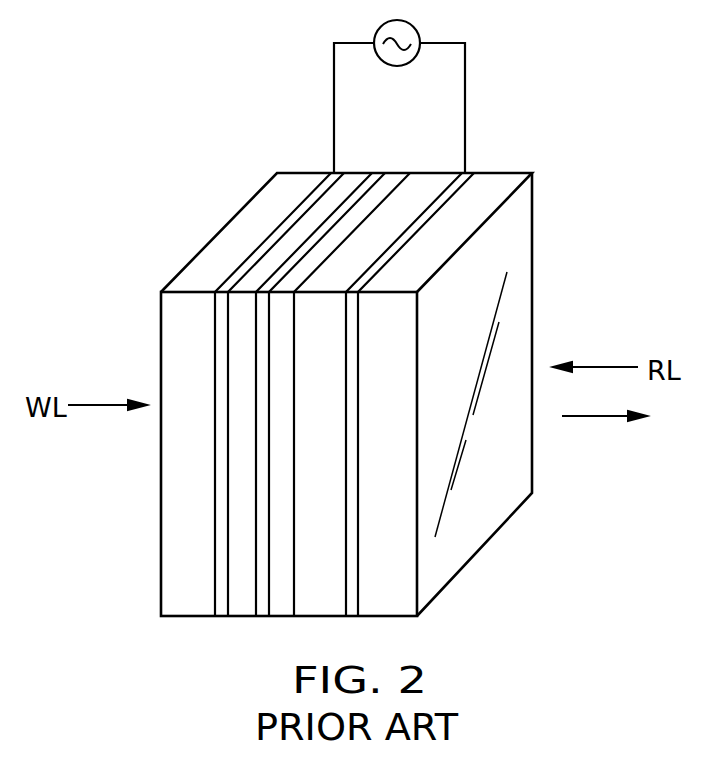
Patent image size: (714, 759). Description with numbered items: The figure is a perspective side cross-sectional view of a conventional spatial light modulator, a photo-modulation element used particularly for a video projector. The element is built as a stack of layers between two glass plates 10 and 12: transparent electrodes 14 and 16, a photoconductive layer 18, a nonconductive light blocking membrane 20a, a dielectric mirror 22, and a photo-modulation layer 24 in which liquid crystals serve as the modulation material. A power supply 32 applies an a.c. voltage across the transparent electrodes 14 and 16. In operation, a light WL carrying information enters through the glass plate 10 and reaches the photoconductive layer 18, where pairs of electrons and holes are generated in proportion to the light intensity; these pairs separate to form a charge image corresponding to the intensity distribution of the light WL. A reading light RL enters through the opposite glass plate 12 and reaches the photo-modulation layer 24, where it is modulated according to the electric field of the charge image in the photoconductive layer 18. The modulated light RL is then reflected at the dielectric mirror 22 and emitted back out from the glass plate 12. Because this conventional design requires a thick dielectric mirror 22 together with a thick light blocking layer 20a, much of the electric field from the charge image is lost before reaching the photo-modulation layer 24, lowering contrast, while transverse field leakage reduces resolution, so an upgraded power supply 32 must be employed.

The glass plate 10 is at (230, 240).
The glass plate 12 is at (500, 184).
The transparent electrode 14 is at (462, 185).
The transparent electrode 16 is at (323, 185).
The photoconductive layer 18 is at (348, 182).
The nonconductive light blocking membrane 20a is at (377, 180).
The dielectric mirror 22 is at (392, 182).
The photo-modulation layer 24 is at (423, 183).
The power supply 32 is at (411, 61).